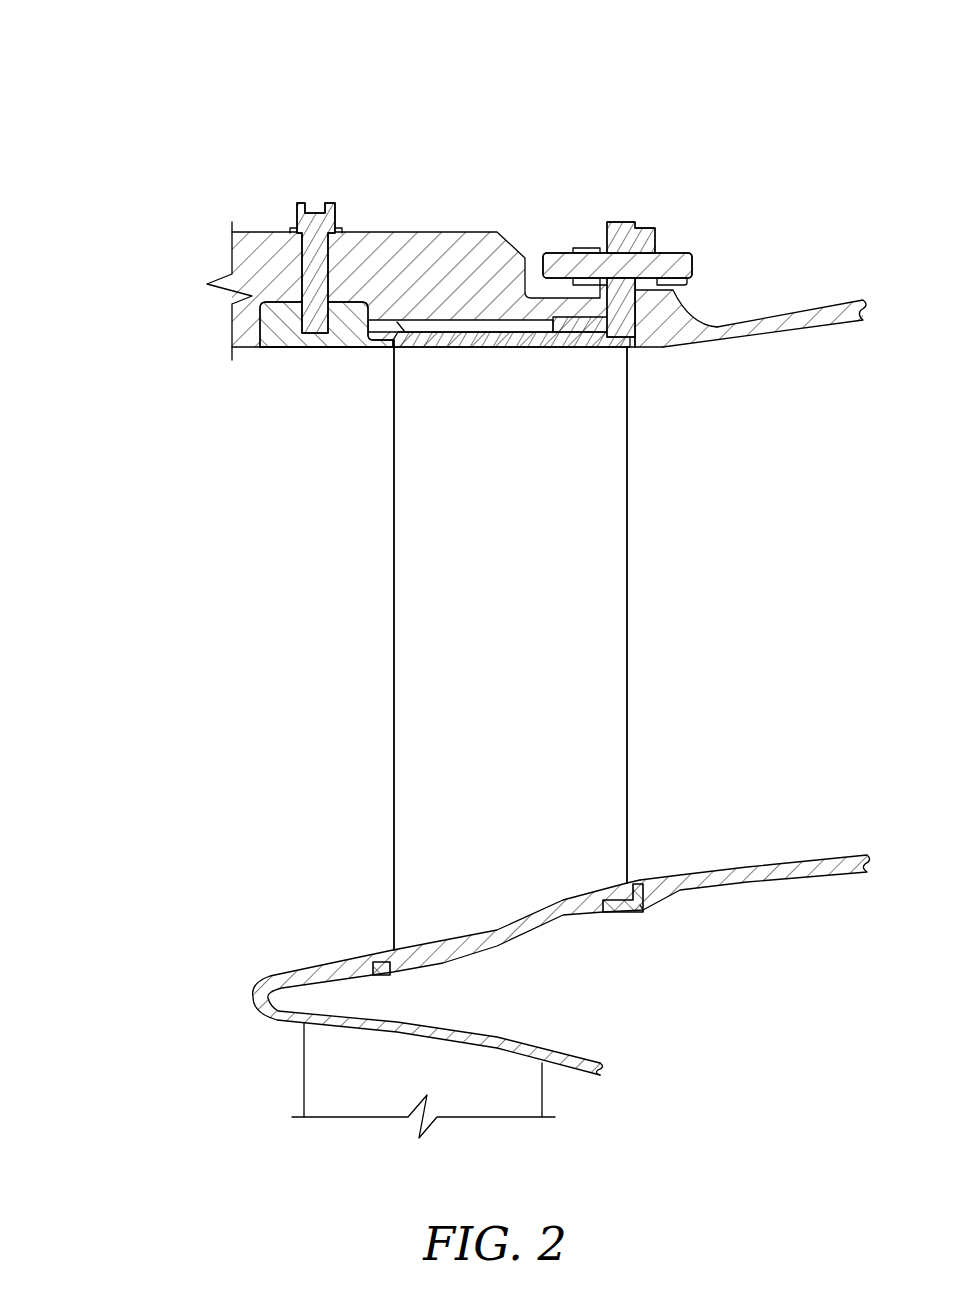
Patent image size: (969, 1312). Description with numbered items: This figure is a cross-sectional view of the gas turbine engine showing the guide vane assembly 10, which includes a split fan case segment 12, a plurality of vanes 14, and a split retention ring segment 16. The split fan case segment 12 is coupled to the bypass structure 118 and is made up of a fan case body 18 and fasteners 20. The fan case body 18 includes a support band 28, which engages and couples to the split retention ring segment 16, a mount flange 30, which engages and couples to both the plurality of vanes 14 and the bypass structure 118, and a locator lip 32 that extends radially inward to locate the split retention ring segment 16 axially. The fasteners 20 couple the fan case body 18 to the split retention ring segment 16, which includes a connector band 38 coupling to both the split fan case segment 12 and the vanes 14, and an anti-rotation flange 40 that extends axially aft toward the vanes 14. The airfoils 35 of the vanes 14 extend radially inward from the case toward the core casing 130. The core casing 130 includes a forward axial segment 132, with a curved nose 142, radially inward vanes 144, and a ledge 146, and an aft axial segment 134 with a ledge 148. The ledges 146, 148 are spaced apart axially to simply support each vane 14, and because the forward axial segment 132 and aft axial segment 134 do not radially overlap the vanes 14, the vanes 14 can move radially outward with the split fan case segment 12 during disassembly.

The guide vane assembly 10 is at (178, 150).
The split fan case segment 12 is at (183, 238).
The plurality of vanes 14 is at (370, 733).
The split retention ring segment 16 is at (278, 418).
The fan case body 18 is at (360, 195).
The fasteners 20 is at (300, 227).
The support band 28 is at (380, 243).
The mount flange 30 is at (620, 228).
The locator lip 32 is at (240, 325).
The airfoils 35 is at (612, 593).
The connector band 38 is at (283, 337).
The anti-rotation flange 40 is at (375, 341).
The bypass structure 118 is at (808, 295).
The core casing 130 is at (583, 993).
The forward axial segment 132 is at (290, 960).
The aft axial segment 134 is at (752, 845).
The curved nose 142 is at (252, 997).
The vanes 144 is at (323, 1057).
The ledge 146 is at (365, 980).
The ledge 148 is at (620, 913).